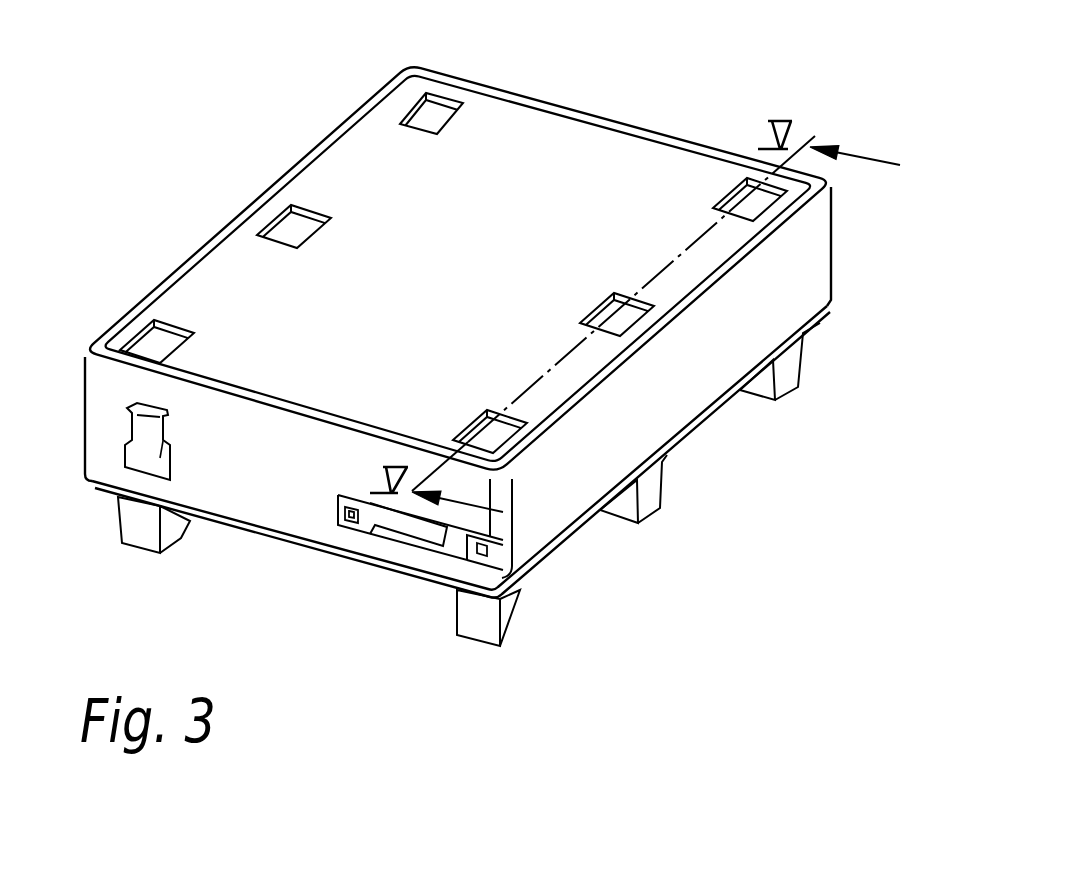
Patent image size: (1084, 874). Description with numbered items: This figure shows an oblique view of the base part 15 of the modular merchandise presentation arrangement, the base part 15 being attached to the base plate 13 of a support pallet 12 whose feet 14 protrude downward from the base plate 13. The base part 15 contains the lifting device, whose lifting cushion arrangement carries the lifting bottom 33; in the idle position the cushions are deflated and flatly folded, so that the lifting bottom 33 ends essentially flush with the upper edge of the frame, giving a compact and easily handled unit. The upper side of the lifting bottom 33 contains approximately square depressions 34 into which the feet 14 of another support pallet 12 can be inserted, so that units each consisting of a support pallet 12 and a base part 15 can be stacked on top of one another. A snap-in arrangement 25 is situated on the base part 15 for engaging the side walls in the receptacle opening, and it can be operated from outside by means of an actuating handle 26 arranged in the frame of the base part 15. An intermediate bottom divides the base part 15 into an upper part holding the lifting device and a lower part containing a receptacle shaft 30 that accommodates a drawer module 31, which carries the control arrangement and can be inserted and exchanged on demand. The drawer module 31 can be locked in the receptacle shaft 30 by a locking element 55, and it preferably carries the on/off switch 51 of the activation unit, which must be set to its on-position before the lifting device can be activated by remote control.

The support pallet 12 is at (581, 537).
The base plate 13 is at (709, 416).
The feet 14 is at (793, 367).
The base part 15 is at (697, 103).
The snap-in arrangement 25 is at (131, 445).
The actuating handle 26 is at (160, 458).
The receptacle shaft 30 is at (391, 552).
The drawer module 31 is at (455, 545).
The lifting bottom 33 is at (513, 152).
The depressions 34 is at (438, 112).
The on/off switch 51 is at (497, 550).
The locking element 55 is at (350, 512).